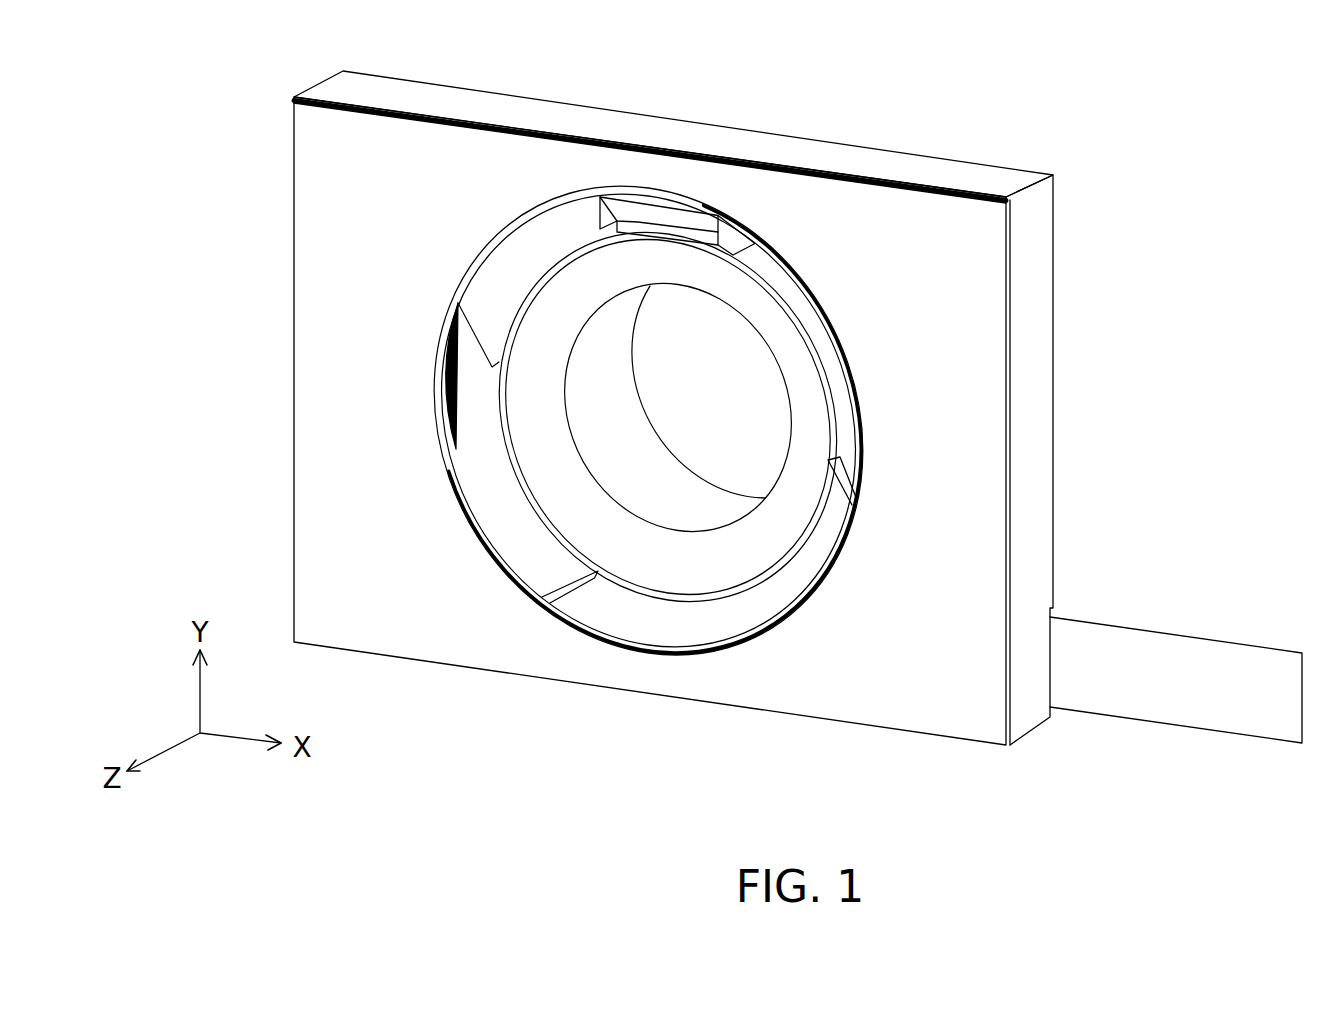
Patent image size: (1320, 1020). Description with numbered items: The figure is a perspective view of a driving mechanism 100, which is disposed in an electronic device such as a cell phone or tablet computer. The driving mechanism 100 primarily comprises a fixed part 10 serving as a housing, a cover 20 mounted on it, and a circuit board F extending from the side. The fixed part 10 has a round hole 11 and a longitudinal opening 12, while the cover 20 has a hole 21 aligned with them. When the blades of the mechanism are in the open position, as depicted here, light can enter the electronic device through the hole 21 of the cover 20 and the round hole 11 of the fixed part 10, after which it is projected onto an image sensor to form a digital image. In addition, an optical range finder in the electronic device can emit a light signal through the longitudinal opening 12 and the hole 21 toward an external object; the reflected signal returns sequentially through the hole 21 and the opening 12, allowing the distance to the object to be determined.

The driving mechanism 100 is at (1128, 143).
The fixed part 10 is at (1033, 271).
The round hole 11 is at (730, 308).
The longitudinal opening 12 is at (655, 202).
The cover 20 is at (860, 697).
The hole 21 is at (656, 650).
The circuit board F is at (1186, 662).